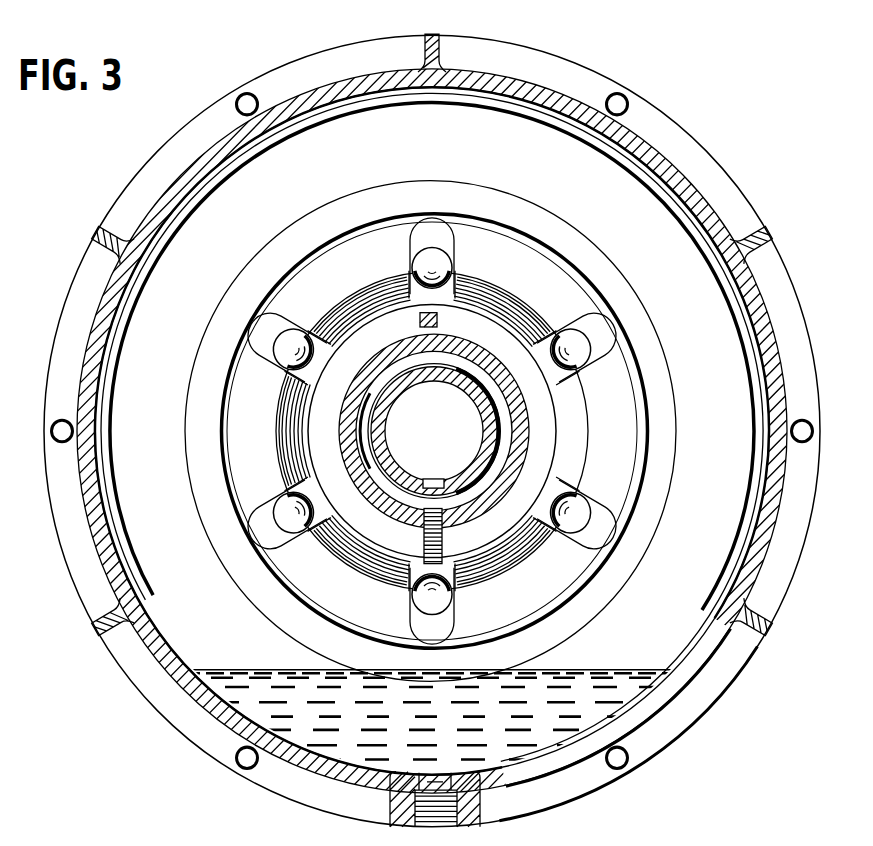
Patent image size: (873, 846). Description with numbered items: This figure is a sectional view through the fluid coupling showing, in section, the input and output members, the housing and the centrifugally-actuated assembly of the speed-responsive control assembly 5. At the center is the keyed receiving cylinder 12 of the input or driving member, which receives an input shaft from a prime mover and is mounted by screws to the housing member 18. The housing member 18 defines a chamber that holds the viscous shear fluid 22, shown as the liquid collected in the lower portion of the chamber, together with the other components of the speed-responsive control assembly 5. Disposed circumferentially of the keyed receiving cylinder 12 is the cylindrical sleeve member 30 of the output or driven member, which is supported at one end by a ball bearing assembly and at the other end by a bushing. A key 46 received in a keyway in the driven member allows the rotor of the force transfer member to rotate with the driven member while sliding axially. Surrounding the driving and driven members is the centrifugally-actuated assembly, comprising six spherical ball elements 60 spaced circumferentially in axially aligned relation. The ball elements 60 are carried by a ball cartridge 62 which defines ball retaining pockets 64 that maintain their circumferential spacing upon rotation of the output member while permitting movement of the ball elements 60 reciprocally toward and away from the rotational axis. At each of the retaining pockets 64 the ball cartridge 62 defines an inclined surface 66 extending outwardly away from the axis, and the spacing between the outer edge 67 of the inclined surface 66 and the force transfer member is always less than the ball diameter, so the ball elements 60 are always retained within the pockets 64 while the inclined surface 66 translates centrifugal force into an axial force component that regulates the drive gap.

The speed-responsive control assembly 5 is at (432, 356).
The keyed receiving cylinder 12 is at (434, 431).
The housing member 18 is at (436, 430).
The viscous shear fluid 22 is at (446, 723).
The sleeve member 30 is at (434, 431).
The key 46 is at (447, 322).
The ball elements 60 is at (444, 432).
The ball cartridge 62 is at (430, 431).
The ball retaining pockets 64 is at (432, 431).
The inclined surface 66 is at (399, 431).
The outer edge of the inclined surface 67 is at (432, 431).